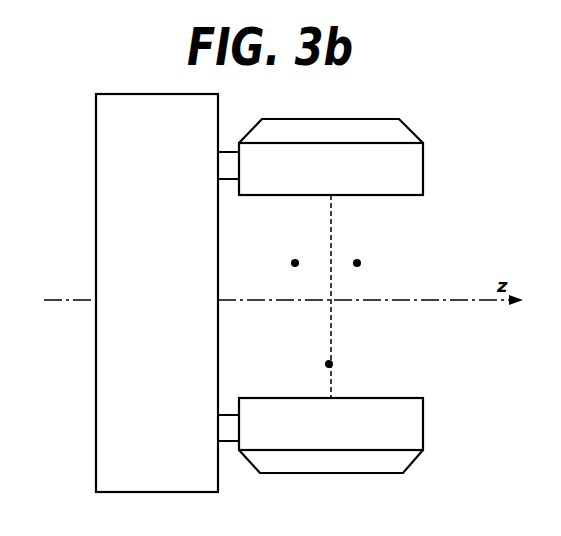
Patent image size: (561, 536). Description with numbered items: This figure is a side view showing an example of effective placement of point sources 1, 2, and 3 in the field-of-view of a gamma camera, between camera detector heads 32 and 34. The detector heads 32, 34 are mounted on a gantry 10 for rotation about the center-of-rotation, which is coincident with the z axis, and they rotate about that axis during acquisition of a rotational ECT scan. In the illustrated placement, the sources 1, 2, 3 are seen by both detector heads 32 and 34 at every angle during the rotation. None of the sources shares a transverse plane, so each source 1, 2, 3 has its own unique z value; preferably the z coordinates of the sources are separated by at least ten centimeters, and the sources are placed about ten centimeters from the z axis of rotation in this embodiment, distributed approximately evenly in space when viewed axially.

The gantry 10 is at (168, 299).
The camera detector head 32 is at (423, 169).
The camera detector head 34 is at (423, 432).
The point source 1 is at (284, 254).
The point source 2 is at (318, 361).
The point source 3 is at (369, 262).